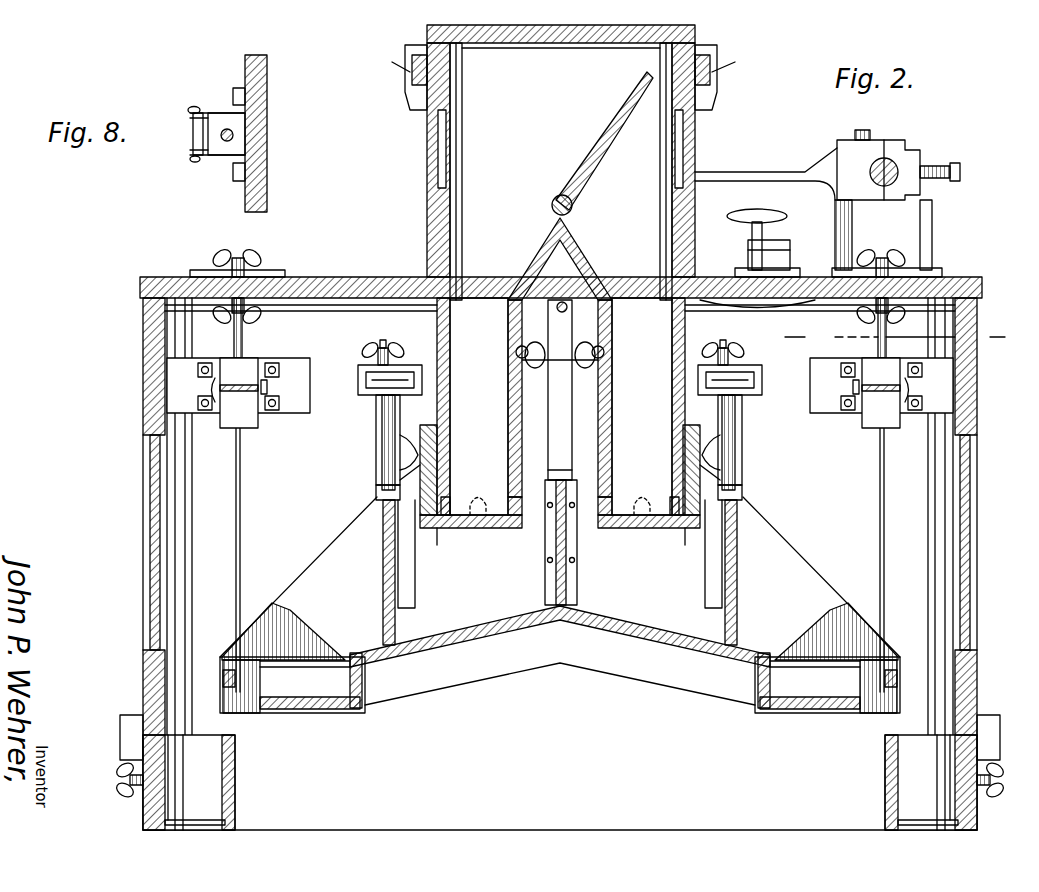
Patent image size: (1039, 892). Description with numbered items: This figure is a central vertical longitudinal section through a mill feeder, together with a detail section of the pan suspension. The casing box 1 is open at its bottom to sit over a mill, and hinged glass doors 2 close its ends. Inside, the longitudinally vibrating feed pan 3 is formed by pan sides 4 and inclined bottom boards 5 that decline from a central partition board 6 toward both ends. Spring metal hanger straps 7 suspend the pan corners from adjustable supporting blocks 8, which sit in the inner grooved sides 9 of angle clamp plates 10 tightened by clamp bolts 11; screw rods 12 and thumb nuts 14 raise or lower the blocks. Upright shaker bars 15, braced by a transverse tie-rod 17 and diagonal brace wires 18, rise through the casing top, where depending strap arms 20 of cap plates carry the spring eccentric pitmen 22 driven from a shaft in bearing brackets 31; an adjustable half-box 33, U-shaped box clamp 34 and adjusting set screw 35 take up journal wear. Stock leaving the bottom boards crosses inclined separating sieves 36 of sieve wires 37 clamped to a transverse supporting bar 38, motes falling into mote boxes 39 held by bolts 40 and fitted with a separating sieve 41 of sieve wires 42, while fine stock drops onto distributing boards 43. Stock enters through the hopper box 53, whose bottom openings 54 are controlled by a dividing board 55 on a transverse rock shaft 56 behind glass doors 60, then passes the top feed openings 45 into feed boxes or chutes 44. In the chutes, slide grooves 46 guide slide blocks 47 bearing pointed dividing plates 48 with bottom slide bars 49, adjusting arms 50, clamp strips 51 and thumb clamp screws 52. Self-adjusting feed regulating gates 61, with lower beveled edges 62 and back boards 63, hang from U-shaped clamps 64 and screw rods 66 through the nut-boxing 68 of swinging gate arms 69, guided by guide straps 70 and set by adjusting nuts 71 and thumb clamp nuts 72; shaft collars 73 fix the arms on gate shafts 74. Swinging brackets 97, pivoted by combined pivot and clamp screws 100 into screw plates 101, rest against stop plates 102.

The casing box 1 is at (560, 786).
The hinged glass doors 2 is at (143, 578).
The feed pan 3 is at (560, 578).
The pan sides 4 is at (490, 680).
The inclined bottom boards 5 is at (565, 622).
The central partition board 6 is at (566, 578).
The spring metal hanger straps 7 is at (240, 508).
The adjustable supporting blocks 8 is at (252, 418).
The inner grooved sides 9 is at (217, 415).
The angle clamp plates 10 is at (300, 387).
The clamp bolts 11 is at (233, 393).
The screw rods 12 is at (242, 336).
The thumb nuts 14 is at (250, 260).
The upright shaker bars 15 is at (560, 435).
The transverse tie-rod 17 is at (561, 300).
The diagonal brace wires 18 is at (562, 467).
The depending strap arms 20 is at (870, 172).
The spring eccentric pitmen 22 is at (770, 165).
The bearing brackets 31 is at (932, 211).
The adjustable half-box 33 is at (905, 150).
The U-shaped box clamp 34 is at (880, 140).
The adjusting set screw 35 is at (960, 169).
The inclined separating sieves 36 is at (755, 710).
The sieve wires 37 is at (300, 665).
The transverse supporting bar 38 is at (222, 683).
The mote boxes 39 is at (215, 765).
The bolts 40 is at (128, 780).
The separating sieve 41 is at (220, 822).
The sieve wires 42 is at (180, 820).
The distributing boards 43 is at (318, 710).
The feed boxes or chutes 44 is at (440, 325).
The top feed openings 45 is at (472, 282).
The slide grooves 46 is at (508, 500).
The slide blocks 47 is at (437, 545).
The pointed dividing plates 48 is at (561, 406).
The bottom slide bars 49 is at (560, 533).
The adjusting arms 50 is at (476, 492).
The clamp strips 51 is at (437, 428).
The thumb clamp screws 52 is at (405, 450).
The hopper box 53 is at (561, 162).
The bottom openings 54 is at (510, 268).
The dividing board 55 is at (608, 130).
The transverse rock shaft 56 is at (553, 198).
The glass doors 60 is at (438, 174).
The self-adjusting feed regulating gates 61 is at (383, 605).
The lower beveled edges 62 is at (560, 678).
The back boards 63 is at (412, 590).
The U-shaped clamps 64 is at (376, 490).
The screw rods 66 is at (376, 470).
The nut-boxing 68 is at (358, 395).
The swinging gate arms 69 is at (410, 380).
The guide straps 70 is at (382, 430).
The adjusting nuts 71 is at (425, 368).
The thumb clamp nuts 72 is at (760, 335).
The shaft collars 73 is at (560, 378).
The gate shafts 74 is at (565, 347).
The swinging brackets 97 is at (790, 250).
The combined pivot and clamp screws 100 is at (752, 230).
The screw plates 101 is at (800, 306).
The stop plates 102 is at (742, 268).